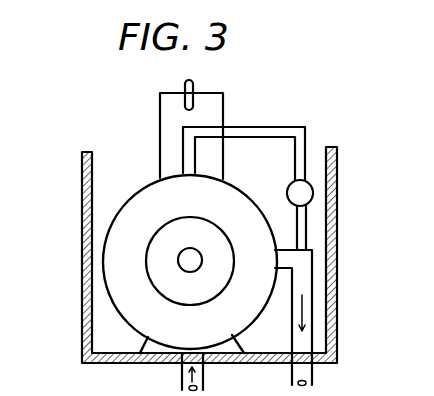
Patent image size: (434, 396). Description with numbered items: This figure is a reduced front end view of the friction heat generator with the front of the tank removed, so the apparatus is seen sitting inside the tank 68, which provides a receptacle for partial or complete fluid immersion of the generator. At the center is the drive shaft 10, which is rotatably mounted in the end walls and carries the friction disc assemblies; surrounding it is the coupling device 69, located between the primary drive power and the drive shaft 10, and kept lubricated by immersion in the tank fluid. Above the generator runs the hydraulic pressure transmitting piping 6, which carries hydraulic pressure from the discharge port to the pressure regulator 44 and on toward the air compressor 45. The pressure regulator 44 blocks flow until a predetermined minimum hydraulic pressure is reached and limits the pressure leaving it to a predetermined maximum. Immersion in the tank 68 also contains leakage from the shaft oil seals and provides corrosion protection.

The tank 68 is at (77, 163).
The drive shaft 10 is at (181, 250).
The coupling device 69 is at (218, 220).
The air compressor 45 is at (200, 93).
The hydraulic pressure transmitting piping 6 is at (277, 121).
The pressure regulator 44 is at (338, 196).